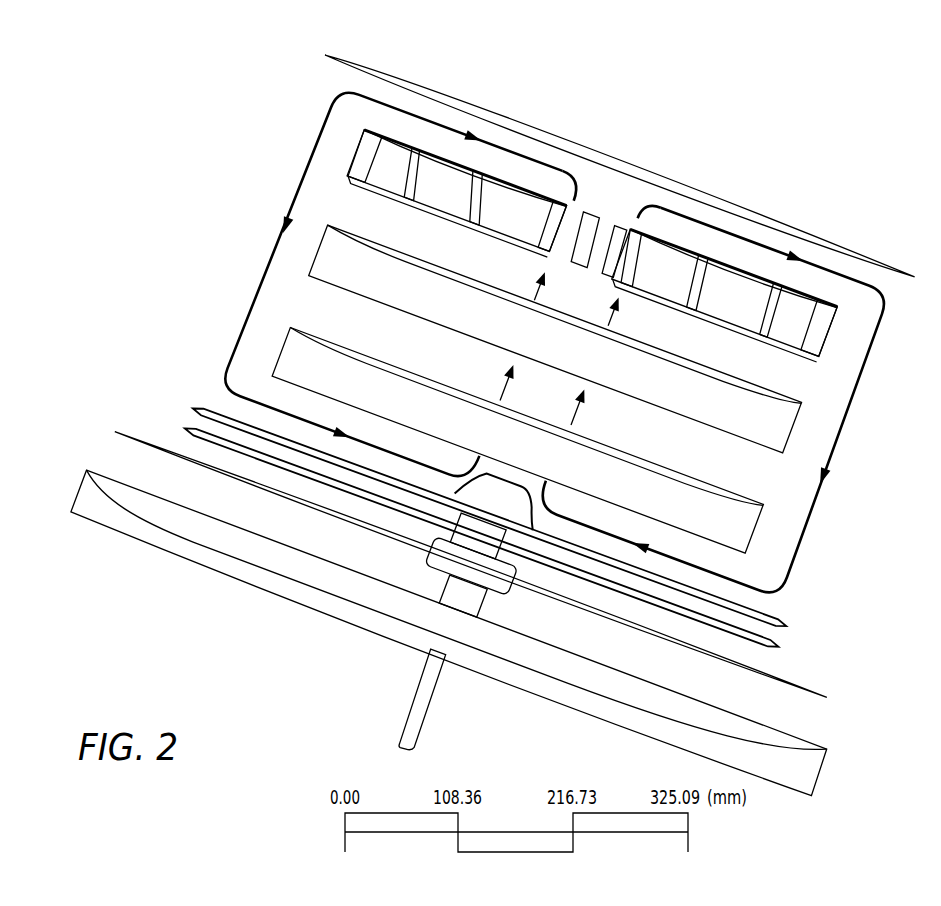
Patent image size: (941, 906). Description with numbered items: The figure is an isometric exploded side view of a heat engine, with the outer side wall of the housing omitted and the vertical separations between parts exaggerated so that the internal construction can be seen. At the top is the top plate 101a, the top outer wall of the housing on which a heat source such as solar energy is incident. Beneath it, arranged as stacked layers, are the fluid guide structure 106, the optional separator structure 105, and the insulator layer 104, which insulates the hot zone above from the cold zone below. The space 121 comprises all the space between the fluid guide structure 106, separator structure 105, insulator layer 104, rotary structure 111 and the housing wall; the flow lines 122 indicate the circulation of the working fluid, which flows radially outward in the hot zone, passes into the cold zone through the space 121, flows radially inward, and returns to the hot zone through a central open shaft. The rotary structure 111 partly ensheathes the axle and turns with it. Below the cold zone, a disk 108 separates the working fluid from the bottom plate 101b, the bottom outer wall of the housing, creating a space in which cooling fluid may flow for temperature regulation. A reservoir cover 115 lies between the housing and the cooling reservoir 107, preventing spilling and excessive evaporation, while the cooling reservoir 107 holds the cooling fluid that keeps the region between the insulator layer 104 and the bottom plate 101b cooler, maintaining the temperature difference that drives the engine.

The space 121 is at (341, 211).
The flow lines 122 is at (577, 180).
The top plate 101a is at (847, 251).
The fluid guide structure 106 is at (816, 298).
The separator structure 105 is at (779, 383).
The insulator layer 104 is at (732, 485).
The rotary structure 111 is at (503, 590).
The disk 108 is at (780, 624).
The bottom plate 101b is at (775, 648).
The reservoir cover 115 is at (822, 692).
The cooling reservoir 107 is at (821, 768).